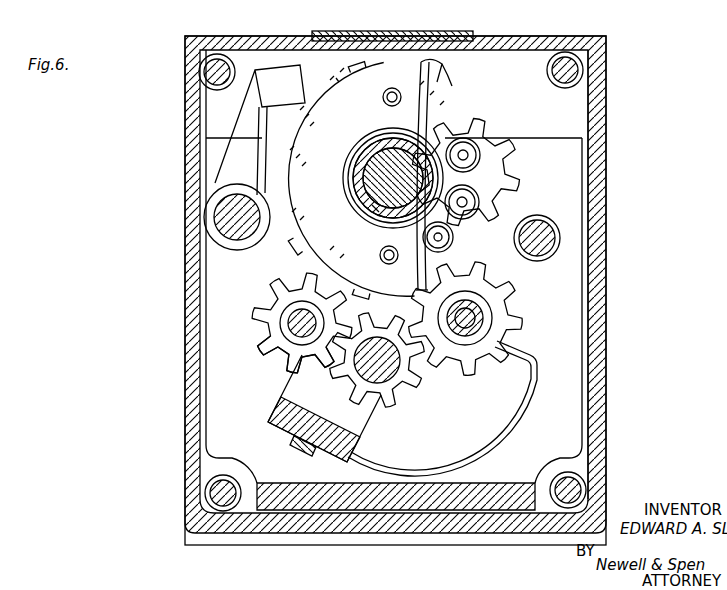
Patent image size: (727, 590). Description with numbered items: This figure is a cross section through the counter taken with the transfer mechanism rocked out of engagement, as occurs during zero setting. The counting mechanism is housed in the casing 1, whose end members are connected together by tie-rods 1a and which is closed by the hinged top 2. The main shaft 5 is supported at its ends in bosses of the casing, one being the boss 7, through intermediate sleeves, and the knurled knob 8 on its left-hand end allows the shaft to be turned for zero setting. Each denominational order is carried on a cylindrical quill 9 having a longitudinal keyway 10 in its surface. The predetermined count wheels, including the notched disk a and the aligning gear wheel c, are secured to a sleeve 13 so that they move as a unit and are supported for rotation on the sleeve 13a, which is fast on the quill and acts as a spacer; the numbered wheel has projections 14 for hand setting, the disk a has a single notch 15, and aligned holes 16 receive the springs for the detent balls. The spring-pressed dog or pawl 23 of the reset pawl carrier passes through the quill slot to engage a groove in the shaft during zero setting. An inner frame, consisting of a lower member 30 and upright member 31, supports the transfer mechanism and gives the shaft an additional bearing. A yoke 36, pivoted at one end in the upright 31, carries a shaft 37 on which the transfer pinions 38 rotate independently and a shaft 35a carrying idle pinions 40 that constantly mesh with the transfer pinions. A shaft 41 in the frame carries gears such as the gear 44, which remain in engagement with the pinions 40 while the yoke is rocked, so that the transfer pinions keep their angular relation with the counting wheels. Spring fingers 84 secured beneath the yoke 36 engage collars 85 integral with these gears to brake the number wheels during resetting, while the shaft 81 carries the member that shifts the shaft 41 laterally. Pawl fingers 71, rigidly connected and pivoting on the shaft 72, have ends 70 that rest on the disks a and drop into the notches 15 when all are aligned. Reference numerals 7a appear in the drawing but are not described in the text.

The casing 1 is at (582, 121).
The tie-rods 1a is at (207, 66).
The hinged top 2 is at (548, 36).
The shaft 5 is at (372, 178).
The boss 7 is at (433, 62).
The plate posts 7a is at (205, 493).
The knurled knob 8 is at (474, 108).
The quill 9 is at (368, 158).
The keyway 10 is at (412, 279).
The sleeve 13 is at (375, 216).
The sleeve 13a is at (355, 210).
The projections 14 is at (357, 62).
The notch 15 is at (312, 108).
The holes 16 is at (393, 88).
The dog or pawl 23 is at (403, 152).
The lower member 30 is at (346, 498).
The upright member 31 is at (584, 214).
The shaft 35a is at (390, 384).
The yoke 36 is at (354, 431).
The shaft 37 is at (278, 321).
The transfer pinions 38 is at (280, 357).
The pinions 40 is at (410, 386).
The shaft 41 is at (474, 314).
The gear 44 is at (508, 305).
The ends of pawl fingers 70 is at (292, 66).
The pawl fingers 71 is at (256, 118).
The shaft 72 is at (212, 217).
The shaft 81 is at (560, 244).
The spring fingers 84 is at (510, 420).
The collars 85 is at (505, 325).
The disk a is at (338, 80).
The gear wheel c is at (450, 84).